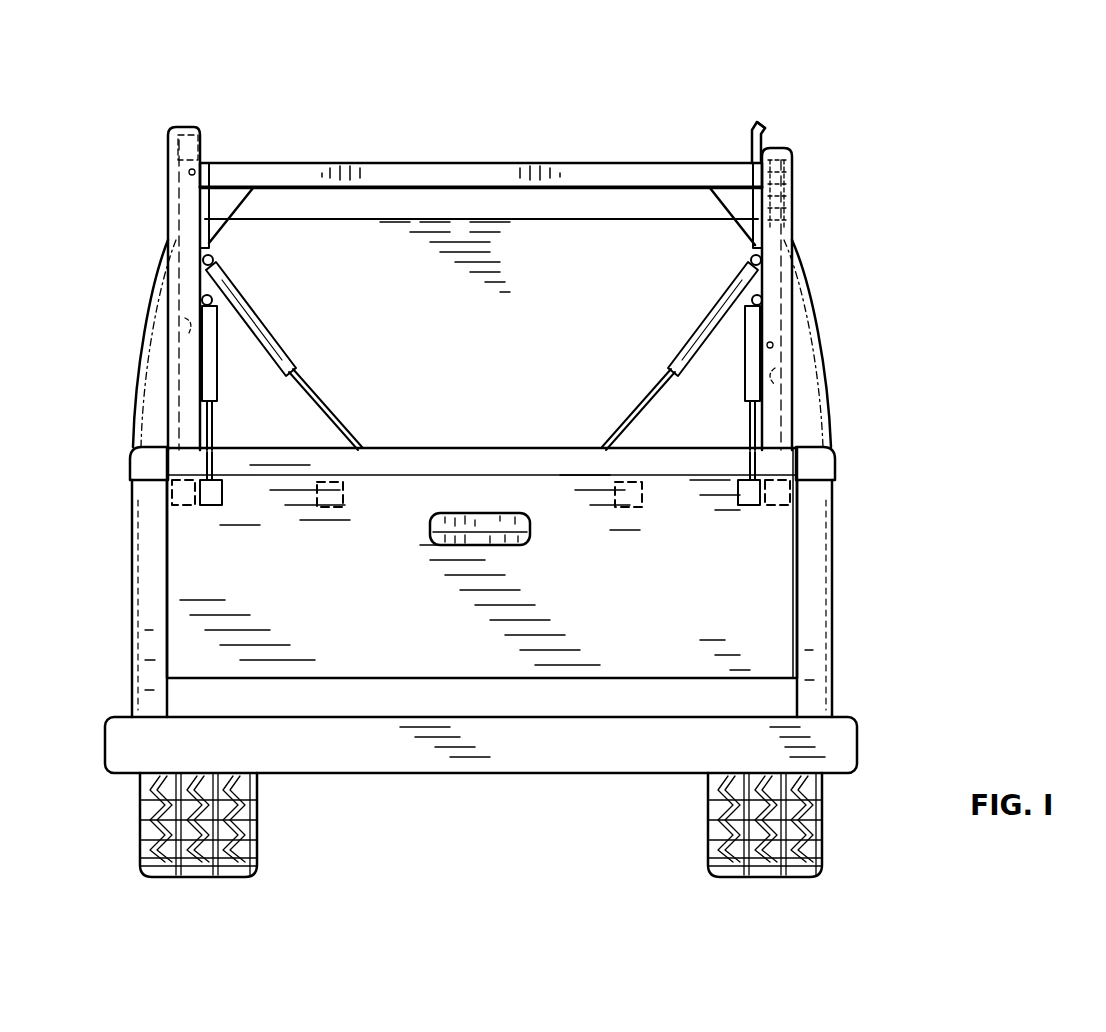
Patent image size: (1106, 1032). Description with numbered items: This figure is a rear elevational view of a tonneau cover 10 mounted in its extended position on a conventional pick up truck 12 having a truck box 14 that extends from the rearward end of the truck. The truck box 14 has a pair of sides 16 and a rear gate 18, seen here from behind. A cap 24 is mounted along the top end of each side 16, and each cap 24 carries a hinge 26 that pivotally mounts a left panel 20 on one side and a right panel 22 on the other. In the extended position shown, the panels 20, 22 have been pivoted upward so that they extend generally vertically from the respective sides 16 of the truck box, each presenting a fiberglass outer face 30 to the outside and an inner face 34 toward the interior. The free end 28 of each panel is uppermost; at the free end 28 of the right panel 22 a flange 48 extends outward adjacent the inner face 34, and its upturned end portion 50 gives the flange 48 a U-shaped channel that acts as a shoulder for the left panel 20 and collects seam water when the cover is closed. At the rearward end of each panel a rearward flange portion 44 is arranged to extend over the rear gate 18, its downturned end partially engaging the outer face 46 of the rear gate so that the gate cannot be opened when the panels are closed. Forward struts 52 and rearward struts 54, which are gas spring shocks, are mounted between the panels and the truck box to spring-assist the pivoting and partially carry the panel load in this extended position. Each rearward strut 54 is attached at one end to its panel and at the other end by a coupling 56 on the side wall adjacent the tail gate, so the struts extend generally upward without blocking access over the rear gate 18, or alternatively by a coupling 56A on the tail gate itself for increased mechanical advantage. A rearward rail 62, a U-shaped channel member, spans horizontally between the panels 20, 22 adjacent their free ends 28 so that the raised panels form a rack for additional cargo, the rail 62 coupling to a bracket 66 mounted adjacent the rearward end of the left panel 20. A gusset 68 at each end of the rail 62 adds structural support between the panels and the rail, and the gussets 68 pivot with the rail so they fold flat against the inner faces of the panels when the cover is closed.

The tonneau cover 10 is at (872, 224).
The pick up truck 12 is at (892, 548).
The truck box 14 is at (125, 546).
The sides 16 is at (130, 595).
The rear gate 18 is at (432, 448).
The left panel 20 is at (168, 285).
The right panel 22 is at (800, 313).
The cap 24 is at (146, 462).
The hinge 26 is at (164, 441).
The free end 28 is at (188, 123).
The outer face 30 is at (168, 192).
The inner face 34 is at (185, 323).
The rearward flange portion 44 is at (193, 145).
The outer face of the rear gate 46 is at (528, 470).
The flange 48 is at (748, 133).
The upturned end portion 50 is at (775, 118).
The forward struts 52 is at (296, 345).
The rearward struts 54 is at (226, 360).
The coupling 56 is at (208, 506).
The coupling 56A is at (330, 507).
The rearward rail 62 is at (456, 160).
The bracket 66 is at (212, 176).
The gusset 68 is at (220, 228).